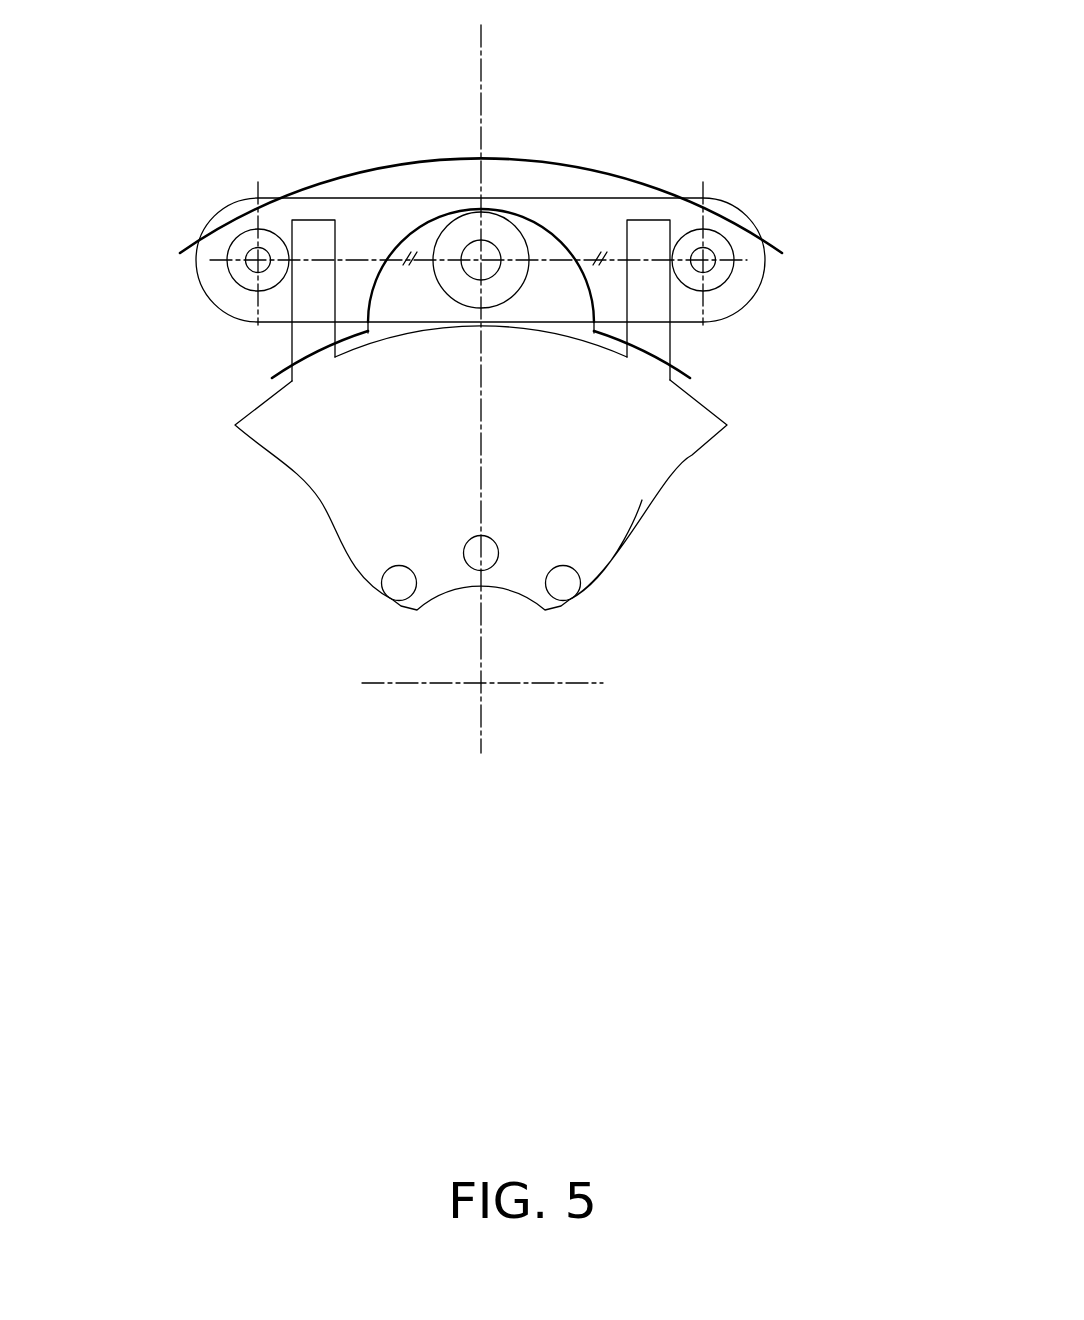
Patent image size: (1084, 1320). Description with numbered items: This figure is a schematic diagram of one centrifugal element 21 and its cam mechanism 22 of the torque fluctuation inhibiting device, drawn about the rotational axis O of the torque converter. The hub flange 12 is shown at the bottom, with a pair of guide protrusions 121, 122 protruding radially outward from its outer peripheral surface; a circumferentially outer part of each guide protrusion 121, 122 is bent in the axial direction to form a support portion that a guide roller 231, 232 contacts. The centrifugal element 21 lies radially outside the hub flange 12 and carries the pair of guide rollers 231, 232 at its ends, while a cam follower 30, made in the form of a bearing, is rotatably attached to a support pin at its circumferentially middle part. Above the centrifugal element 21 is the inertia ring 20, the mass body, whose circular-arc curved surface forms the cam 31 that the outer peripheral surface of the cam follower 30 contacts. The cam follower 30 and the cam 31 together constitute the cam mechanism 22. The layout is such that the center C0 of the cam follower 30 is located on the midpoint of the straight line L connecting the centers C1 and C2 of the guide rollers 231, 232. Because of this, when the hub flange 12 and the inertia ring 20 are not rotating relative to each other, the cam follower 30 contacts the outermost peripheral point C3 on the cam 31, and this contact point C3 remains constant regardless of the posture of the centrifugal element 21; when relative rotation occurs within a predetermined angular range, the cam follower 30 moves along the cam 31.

The hub flange 12 is at (305, 462).
The inertia ring 20 is at (350, 172).
The centrifugal element 21 is at (383, 197).
The cam mechanism 22 is at (445, 210).
The cam follower 30 is at (513, 230).
The cam 31 is at (543, 240).
The guide protrusion 121 is at (658, 337).
The guide protrusion 122 is at (303, 338).
The guide roller 231 is at (723, 237).
The guide roller 232 is at (243, 275).
The center of the cam follower C0 is at (476, 263).
The center of the guide roller C1 is at (708, 258).
The center of the guide roller C2 is at (257, 260).
The outermost peripheral point on the cam C3 is at (482, 212).
The straight line L is at (615, 258).
The rotational axis O is at (482, 389).